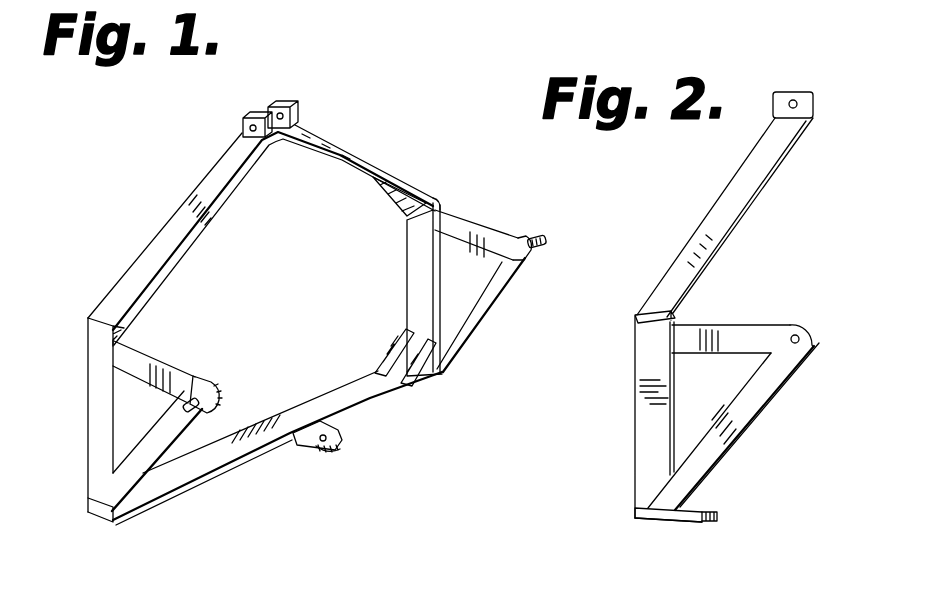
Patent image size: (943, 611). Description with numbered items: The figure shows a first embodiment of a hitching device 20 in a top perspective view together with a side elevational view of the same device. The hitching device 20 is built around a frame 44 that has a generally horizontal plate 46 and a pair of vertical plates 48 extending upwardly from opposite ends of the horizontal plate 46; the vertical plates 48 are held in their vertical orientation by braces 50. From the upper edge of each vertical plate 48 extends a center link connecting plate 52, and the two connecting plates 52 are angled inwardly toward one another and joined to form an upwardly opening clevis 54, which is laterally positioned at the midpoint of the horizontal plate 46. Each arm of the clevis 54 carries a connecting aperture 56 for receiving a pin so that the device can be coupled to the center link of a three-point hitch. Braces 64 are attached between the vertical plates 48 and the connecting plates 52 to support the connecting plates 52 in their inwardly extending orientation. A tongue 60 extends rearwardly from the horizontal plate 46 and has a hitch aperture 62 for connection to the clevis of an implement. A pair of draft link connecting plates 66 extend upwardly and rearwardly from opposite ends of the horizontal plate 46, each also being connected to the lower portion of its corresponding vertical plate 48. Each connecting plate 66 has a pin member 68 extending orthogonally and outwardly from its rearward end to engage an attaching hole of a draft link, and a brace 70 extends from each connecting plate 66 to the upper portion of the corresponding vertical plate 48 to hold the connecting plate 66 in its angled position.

In FIG. 1, the hitching device 20 is at (341, 103).
In FIG. 2, the hitching device 20 is at (684, 196).
In FIG. 1, the frame 44 is at (211, 476).
In FIG. 2, the frame 44 is at (629, 490).
In FIG. 1, the horizontal plate 46 is at (352, 385).
In FIG. 2, the horizontal plate 46 is at (652, 521).
In FIG. 1, the vertical plates 48 is at (98, 414).
In FIG. 2, the vertical plates 48 is at (641, 407).
In FIG. 1, the braces 50 is at (426, 368).
In FIG. 1, the center link connecting plates 52 is at (377, 166).
In FIG. 2, the center link connecting plates 52 is at (703, 238).
In FIG. 1, the clevis 54 is at (264, 93).
In FIG. 2, the clevis 54 is at (813, 103).
In FIG. 1, the connecting aperture 56 is at (243, 130).
In FIG. 2, the connecting aperture 56 is at (795, 100).
In FIG. 1, the tongue 60 is at (326, 447).
In FIG. 2, the tongue 60 is at (719, 516).
In FIG. 1, the hitch aperture 62 is at (332, 437).
In FIG. 1, the braces 64 is at (128, 333).
In FIG. 1, the draft link connecting plates 66 is at (160, 433).
In FIG. 2, the draft link connecting plates 66 is at (752, 410).
In FIG. 1, the pin member 68 is at (189, 390).
In FIG. 2, the pin member 68 is at (800, 333).
In FIG. 1, the brace 70 is at (120, 362).
In FIG. 2, the brace 70 is at (731, 331).